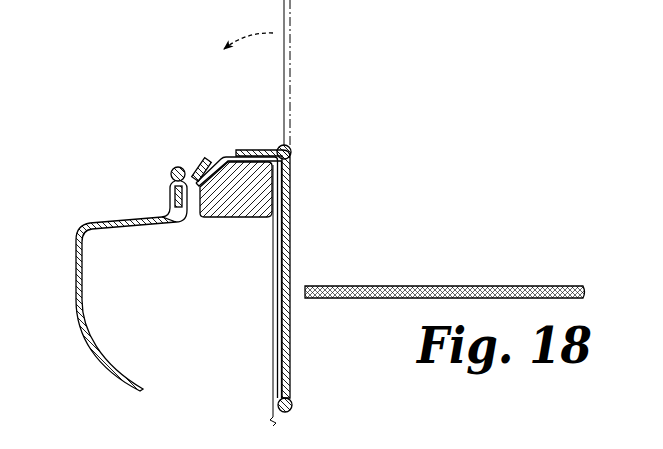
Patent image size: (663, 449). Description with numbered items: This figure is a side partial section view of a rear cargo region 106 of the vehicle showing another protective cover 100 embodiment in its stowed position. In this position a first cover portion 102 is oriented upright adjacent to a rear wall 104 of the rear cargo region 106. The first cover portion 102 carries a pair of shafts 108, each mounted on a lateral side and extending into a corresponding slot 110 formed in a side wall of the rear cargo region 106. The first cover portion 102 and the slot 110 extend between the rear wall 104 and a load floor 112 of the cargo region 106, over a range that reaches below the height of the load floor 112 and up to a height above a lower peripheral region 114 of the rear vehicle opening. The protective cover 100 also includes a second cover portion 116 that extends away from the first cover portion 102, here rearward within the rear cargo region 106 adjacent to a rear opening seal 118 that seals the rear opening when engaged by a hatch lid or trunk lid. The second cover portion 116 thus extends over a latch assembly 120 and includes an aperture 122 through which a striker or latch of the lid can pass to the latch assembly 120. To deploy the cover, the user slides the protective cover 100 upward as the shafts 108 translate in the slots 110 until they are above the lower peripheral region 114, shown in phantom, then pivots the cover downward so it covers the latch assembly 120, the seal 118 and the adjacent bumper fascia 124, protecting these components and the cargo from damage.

The protective cover 100 is at (294, 265).
The first cover portion 102 is at (289, 202).
The rear wall 104 is at (273, 325).
The rear cargo region 106 is at (472, 150).
The shaft 108 is at (280, 401).
The slot 110 is at (289, 157).
The load floor 112 is at (457, 286).
The lower peripheral region 114 is at (177, 163).
The second cover portion 116 is at (191, 158).
The rear opening seal 118 is at (171, 178).
The latch assembly 120 is at (232, 219).
The aperture 122 is at (218, 149).
The bumper fascia 124 is at (76, 305).